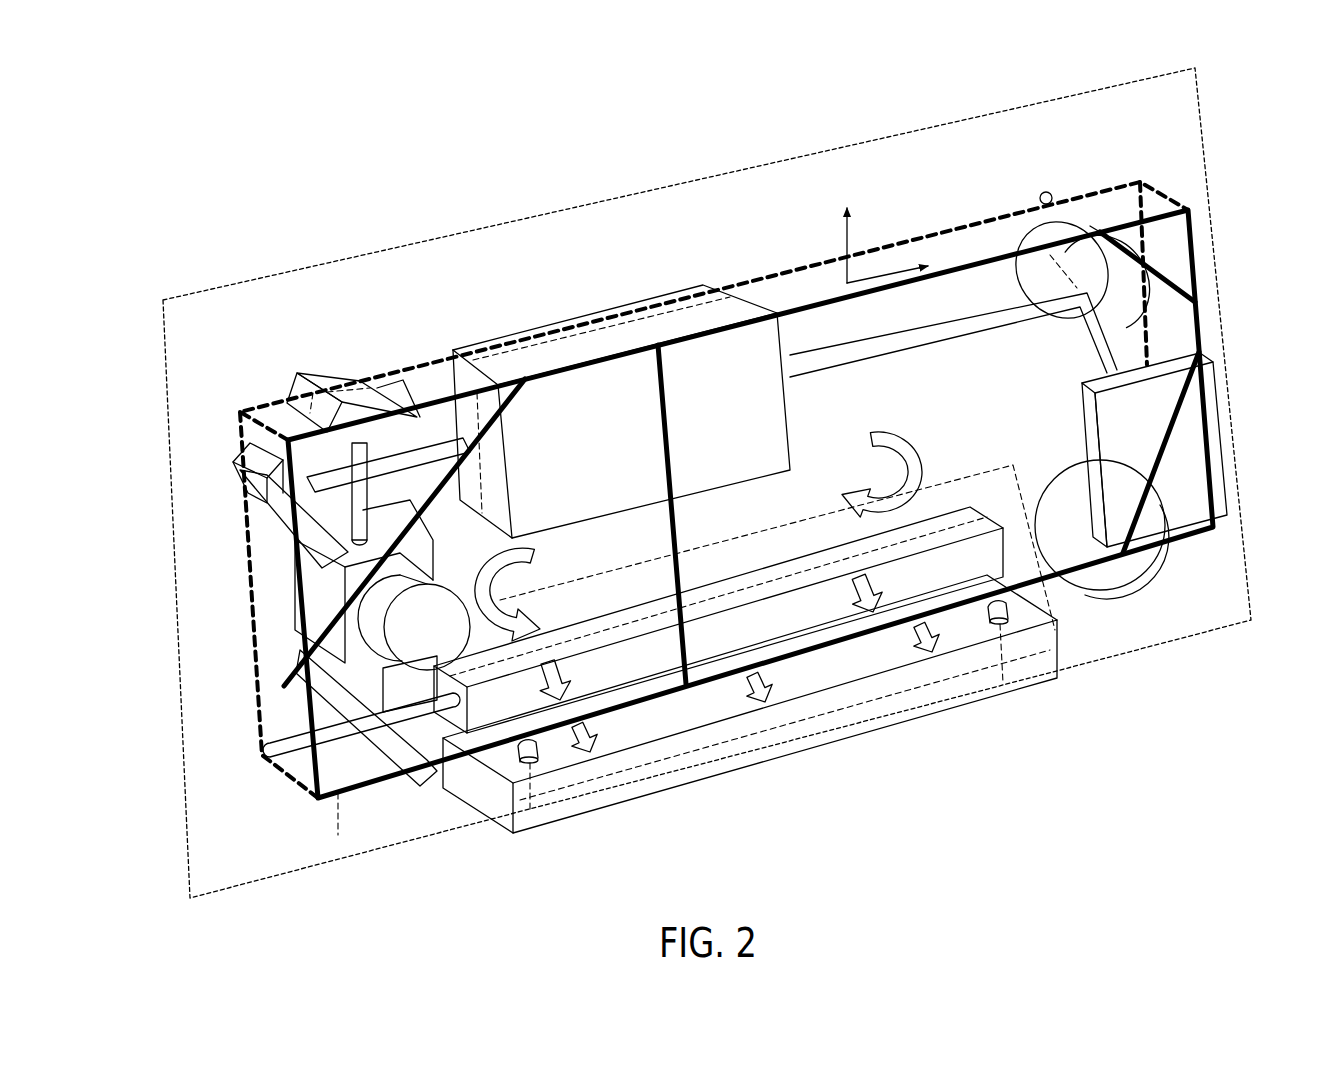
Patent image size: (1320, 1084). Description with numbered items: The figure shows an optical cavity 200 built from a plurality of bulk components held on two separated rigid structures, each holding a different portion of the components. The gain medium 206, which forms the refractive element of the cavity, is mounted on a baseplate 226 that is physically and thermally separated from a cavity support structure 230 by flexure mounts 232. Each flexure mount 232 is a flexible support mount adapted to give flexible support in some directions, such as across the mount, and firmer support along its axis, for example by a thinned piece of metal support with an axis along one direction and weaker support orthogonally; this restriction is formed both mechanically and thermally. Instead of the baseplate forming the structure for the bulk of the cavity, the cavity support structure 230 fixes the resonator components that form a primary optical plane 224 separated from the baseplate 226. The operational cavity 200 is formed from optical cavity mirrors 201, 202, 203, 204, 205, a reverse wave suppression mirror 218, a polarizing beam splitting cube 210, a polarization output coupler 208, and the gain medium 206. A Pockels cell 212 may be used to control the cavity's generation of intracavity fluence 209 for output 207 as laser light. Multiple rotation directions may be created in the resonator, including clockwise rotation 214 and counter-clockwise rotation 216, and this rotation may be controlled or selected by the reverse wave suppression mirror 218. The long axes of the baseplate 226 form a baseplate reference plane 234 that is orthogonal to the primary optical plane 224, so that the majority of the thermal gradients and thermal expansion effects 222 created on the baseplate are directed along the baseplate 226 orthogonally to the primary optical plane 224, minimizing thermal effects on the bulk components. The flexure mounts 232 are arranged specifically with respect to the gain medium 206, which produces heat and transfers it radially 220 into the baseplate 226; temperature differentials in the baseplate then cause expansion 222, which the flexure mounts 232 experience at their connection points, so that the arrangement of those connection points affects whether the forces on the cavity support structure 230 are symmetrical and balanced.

The optical cavity 200 is at (266, 120).
The optical cavity mirror 201 is at (240, 462).
The optical cavity mirror 202 is at (290, 366).
The optical cavity mirror 203 is at (1047, 225).
The optical cavity mirror 204 is at (1195, 416).
The optical cavity mirror 205 is at (1150, 604).
The gain medium 206 is at (727, 642).
The output 207 is at (298, 722).
The polarization output coupler 208 is at (405, 762).
The intracavity fluence 209 is at (1013, 332).
The polarizing beam splitting cube 210 is at (330, 578).
The Pockels cell 212 is at (600, 452).
The clockwise rotation 214 is at (902, 428).
The counter-clockwise rotation 216 is at (552, 546).
The reverse wave suppression mirror 218 is at (410, 643).
The radial heat transfer 220 is at (846, 575).
The thermal expansion effects 222 is at (597, 778).
The primary optical plane 224 is at (504, 212).
The baseplate 226 is at (837, 727).
The cavity support structure 230 is at (345, 808).
The flexure mount 232 is at (537, 808).
The baseplate reference plane 234 is at (673, 762).